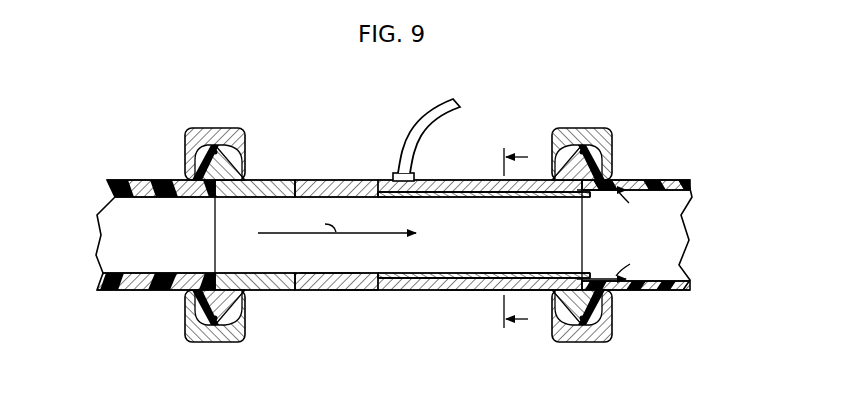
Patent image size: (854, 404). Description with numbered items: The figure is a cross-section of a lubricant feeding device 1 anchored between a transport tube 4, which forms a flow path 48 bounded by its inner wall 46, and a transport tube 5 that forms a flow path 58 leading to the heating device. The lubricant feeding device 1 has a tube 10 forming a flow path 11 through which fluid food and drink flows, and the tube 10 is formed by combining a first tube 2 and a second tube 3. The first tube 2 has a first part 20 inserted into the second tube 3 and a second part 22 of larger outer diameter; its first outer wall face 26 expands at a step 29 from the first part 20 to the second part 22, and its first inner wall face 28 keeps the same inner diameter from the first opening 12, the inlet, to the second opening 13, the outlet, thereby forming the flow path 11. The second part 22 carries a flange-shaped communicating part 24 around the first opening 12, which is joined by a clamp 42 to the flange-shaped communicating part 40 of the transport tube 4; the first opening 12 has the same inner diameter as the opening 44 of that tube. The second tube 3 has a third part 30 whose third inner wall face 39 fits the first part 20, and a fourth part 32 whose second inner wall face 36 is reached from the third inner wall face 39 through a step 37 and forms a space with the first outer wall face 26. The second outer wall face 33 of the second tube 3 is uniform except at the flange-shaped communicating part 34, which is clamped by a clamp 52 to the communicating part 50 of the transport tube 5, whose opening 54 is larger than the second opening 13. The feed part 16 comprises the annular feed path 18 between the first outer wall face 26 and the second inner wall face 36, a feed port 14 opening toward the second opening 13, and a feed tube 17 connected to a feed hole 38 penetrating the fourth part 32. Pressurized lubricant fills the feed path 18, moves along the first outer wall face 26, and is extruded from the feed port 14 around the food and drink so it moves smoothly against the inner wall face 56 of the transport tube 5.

The lubricant feeding device 1 is at (279, 327).
The first tube 2 is at (283, 180).
The second tube 3 is at (330, 180).
The transport tube 4 is at (142, 180).
The transport tube 5 is at (654, 180).
The tube 10 is at (370, 291).
The flow path 11 is at (487, 232).
The first opening 12 is at (214, 241).
The second opening 13 is at (584, 239).
The feed port 14 is at (592, 194).
The feed part 16 is at (397, 165).
The feed tube 17 is at (419, 126).
The feed path 18 is at (458, 182).
The first part 20 is at (340, 291).
The second part 22 is at (248, 290).
The communicating part 24 is at (244, 163).
The first outer wall face 26 is at (445, 291).
The first inner wall face 28 is at (412, 273).
The step 29 is at (300, 186).
The third part 30 is at (350, 291).
The fourth part 32 is at (470, 291).
The second outer wall face 33 is at (432, 180).
The communicating part 34 is at (560, 157).
The second inner wall face 36 is at (502, 278).
The step 37 is at (382, 197).
The feed hole 38 is at (380, 182).
The third inner wall face 39 is at (318, 273).
The communicating part 40 is at (200, 159).
The clamp 42 is at (205, 137).
The opening 44 is at (216, 206).
The inner wall 46 is at (147, 199).
The flow path 48 is at (182, 235).
The communicating part 50 is at (612, 140).
The clamp 52 is at (558, 140).
The opening 54 is at (581, 251).
The inner wall face 56 is at (662, 192).
The flow path 58 is at (676, 248).